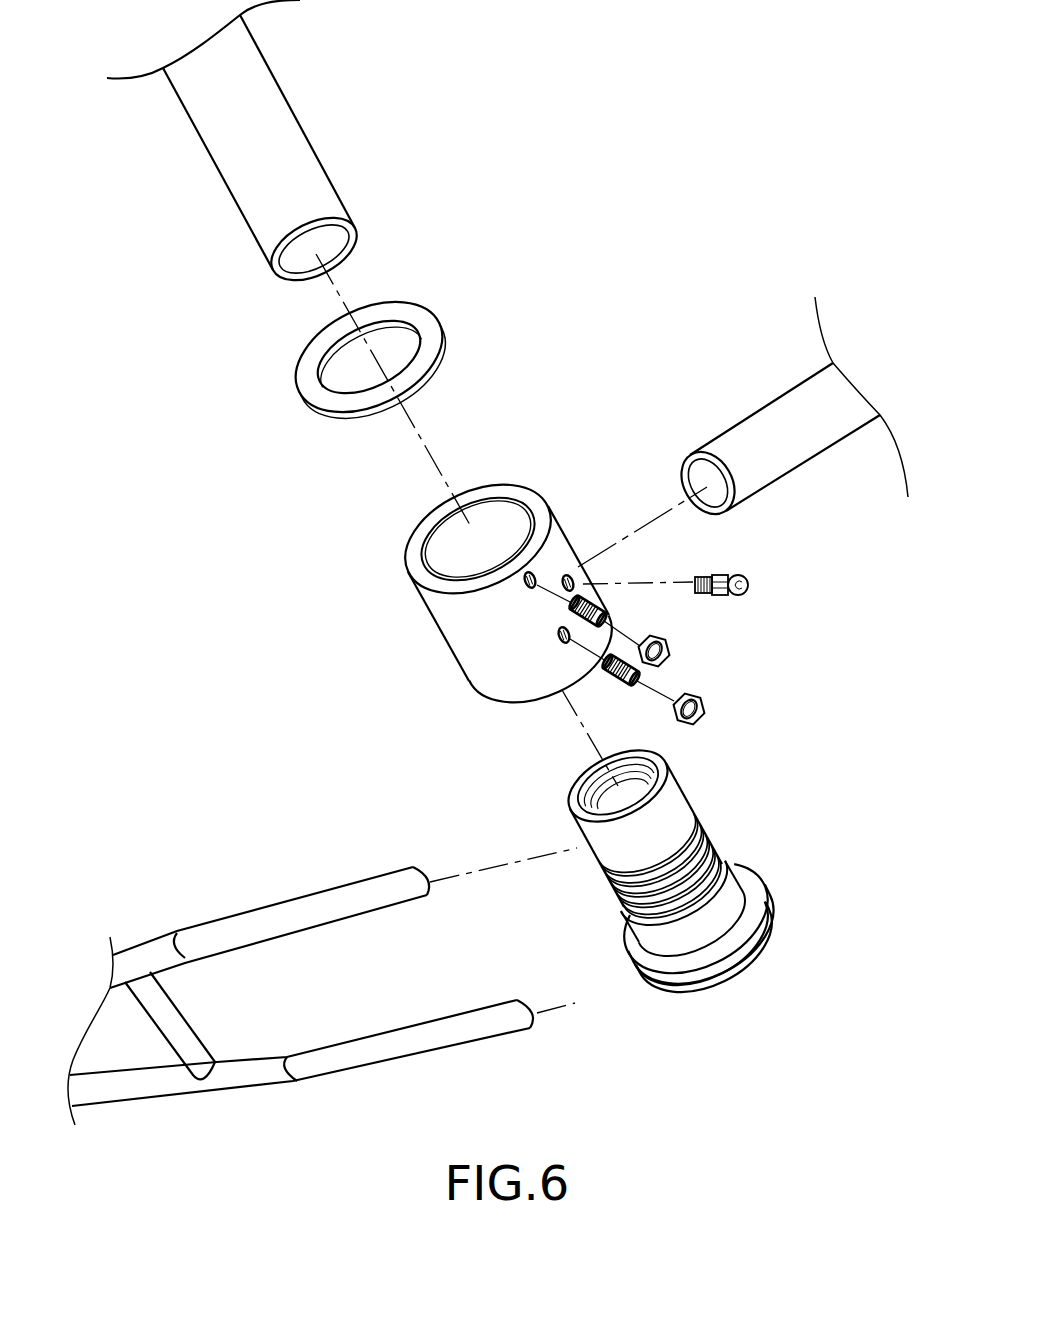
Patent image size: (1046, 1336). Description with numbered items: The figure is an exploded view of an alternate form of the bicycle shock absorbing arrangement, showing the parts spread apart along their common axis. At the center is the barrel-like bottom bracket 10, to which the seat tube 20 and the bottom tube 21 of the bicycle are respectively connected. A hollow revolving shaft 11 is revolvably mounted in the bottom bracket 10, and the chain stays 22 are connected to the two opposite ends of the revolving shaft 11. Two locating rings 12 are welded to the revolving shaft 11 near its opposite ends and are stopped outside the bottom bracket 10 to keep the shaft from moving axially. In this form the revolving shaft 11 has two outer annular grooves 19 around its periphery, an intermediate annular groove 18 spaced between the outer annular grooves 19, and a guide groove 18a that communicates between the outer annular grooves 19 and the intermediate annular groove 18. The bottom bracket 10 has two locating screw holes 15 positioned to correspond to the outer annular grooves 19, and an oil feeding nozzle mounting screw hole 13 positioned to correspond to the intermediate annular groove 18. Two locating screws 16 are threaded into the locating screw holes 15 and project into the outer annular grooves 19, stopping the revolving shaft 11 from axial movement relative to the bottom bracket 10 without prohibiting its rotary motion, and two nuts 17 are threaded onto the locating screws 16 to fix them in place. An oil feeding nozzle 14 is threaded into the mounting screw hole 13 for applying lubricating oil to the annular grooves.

The barrel-like bottom bracket 10 is at (470, 612).
The hollow revolving shaft 11 is at (707, 905).
The locating rings 12 is at (313, 395).
The oil feeding nozzle mounting screw hole 13 is at (575, 568).
The oil feeding nozzle 14 is at (745, 585).
The locating screw holes 15 is at (562, 637).
The locating screws 16 is at (612, 676).
The nuts 17 is at (705, 700).
The intermediate annular groove 18 is at (672, 834).
The guide groove 18a is at (622, 905).
The outer annular grooves 19 is at (697, 815).
The seat tube 20 is at (250, 140).
The bottom tube 21 is at (790, 435).
The chain stays 22 is at (262, 922).